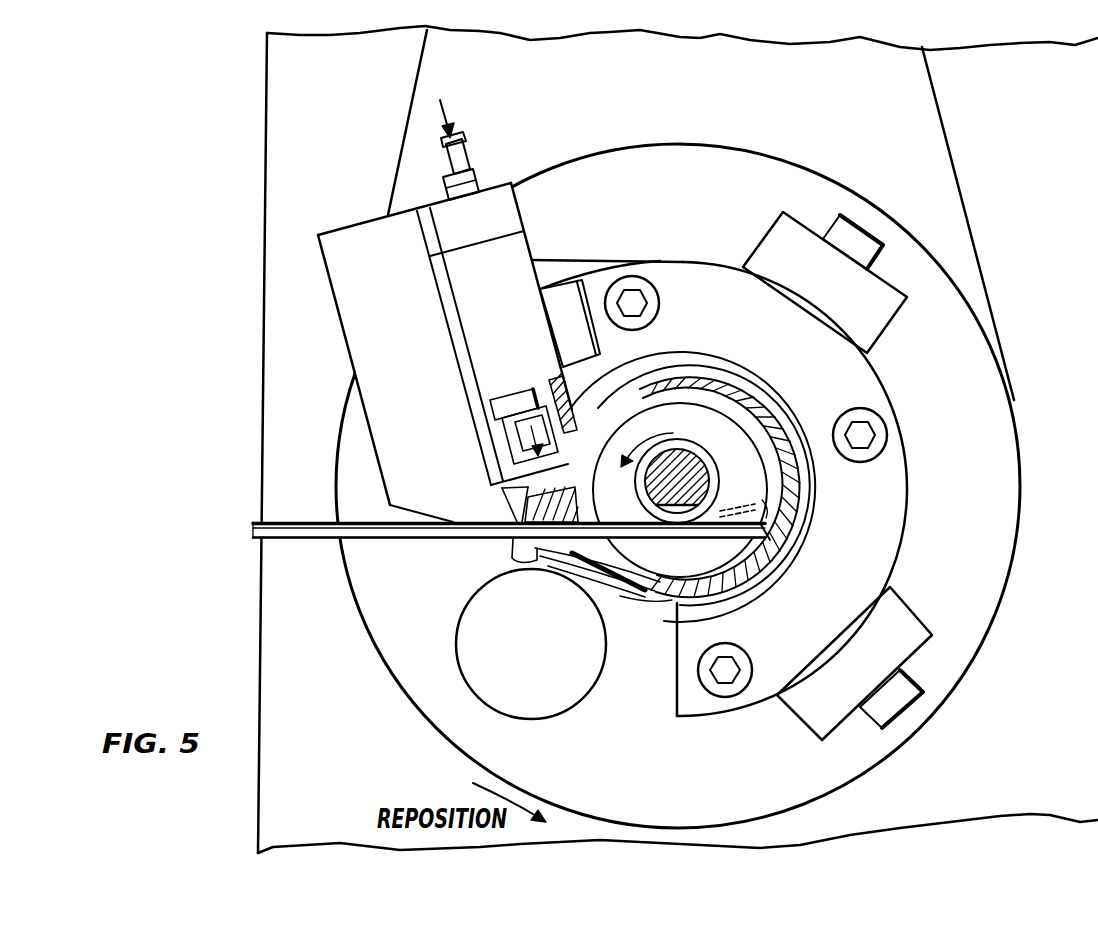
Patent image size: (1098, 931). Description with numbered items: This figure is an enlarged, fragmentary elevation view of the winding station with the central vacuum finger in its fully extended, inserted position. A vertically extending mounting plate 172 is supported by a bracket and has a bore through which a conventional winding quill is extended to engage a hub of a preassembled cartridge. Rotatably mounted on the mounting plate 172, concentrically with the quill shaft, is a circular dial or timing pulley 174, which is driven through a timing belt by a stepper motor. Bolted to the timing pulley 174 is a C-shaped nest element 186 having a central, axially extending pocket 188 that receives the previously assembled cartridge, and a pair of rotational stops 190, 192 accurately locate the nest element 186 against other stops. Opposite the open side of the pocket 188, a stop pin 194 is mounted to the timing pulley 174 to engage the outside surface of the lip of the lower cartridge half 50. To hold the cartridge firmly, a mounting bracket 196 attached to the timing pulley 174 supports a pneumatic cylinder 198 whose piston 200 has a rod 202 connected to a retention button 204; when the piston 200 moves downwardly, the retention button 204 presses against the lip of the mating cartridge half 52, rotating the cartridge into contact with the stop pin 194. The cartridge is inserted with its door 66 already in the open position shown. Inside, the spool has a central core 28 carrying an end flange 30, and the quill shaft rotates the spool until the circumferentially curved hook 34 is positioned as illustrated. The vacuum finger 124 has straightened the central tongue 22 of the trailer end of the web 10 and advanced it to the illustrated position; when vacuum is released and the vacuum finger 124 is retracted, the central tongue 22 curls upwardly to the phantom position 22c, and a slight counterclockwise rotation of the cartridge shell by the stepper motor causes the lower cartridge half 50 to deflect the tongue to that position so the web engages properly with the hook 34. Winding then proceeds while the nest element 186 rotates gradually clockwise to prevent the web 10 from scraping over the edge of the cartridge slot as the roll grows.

The web 10 is at (303, 520).
The central tongue 22 is at (757, 536).
The curled tongue position 22c is at (793, 551).
The central core 28 is at (699, 472).
The end flange 30 is at (717, 423).
The hook 34 is at (725, 492).
The cartridge half 50 is at (637, 597).
The cartridge half 52 is at (675, 376).
The door 66 is at (498, 508).
The vacuum finger 124 is at (300, 540).
The mounting plate 172 is at (283, 305).
The timing pulley 174 is at (1000, 483).
The nest element 186 is at (908, 520).
The pocket 188 is at (817, 478).
The rotational stop 190 is at (767, 234).
The rotational stop 192 is at (912, 640).
The stop pin 194 is at (560, 697).
The mounting bracket 196 is at (356, 245).
The pneumatic cylinder 198 is at (513, 258).
The piston 200 is at (522, 388).
The rod 202 is at (502, 427).
The retention button 204 is at (490, 463).